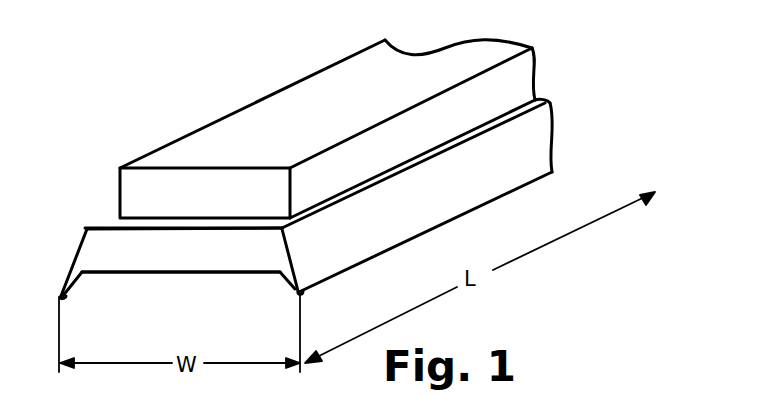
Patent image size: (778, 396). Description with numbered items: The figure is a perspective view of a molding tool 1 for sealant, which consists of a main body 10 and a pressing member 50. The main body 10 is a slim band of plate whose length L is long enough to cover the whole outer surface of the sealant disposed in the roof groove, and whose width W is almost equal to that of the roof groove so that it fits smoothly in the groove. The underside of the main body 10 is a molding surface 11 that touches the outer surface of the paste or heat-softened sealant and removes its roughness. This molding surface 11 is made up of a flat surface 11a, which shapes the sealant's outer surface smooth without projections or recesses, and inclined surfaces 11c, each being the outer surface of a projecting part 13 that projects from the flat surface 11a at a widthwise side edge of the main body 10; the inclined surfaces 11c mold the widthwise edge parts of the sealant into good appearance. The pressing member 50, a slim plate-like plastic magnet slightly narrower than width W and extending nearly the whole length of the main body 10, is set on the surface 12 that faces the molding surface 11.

The molding tool 1 is at (314, 168).
The main body 10 is at (282, 213).
The molding surface 11 is at (181, 300).
The flat surface 11a is at (128, 272).
The inclined surface 11c is at (78, 286).
The surface 12 is at (112, 227).
The projecting part 13 is at (62, 293).
The pressing member 50 is at (263, 110).